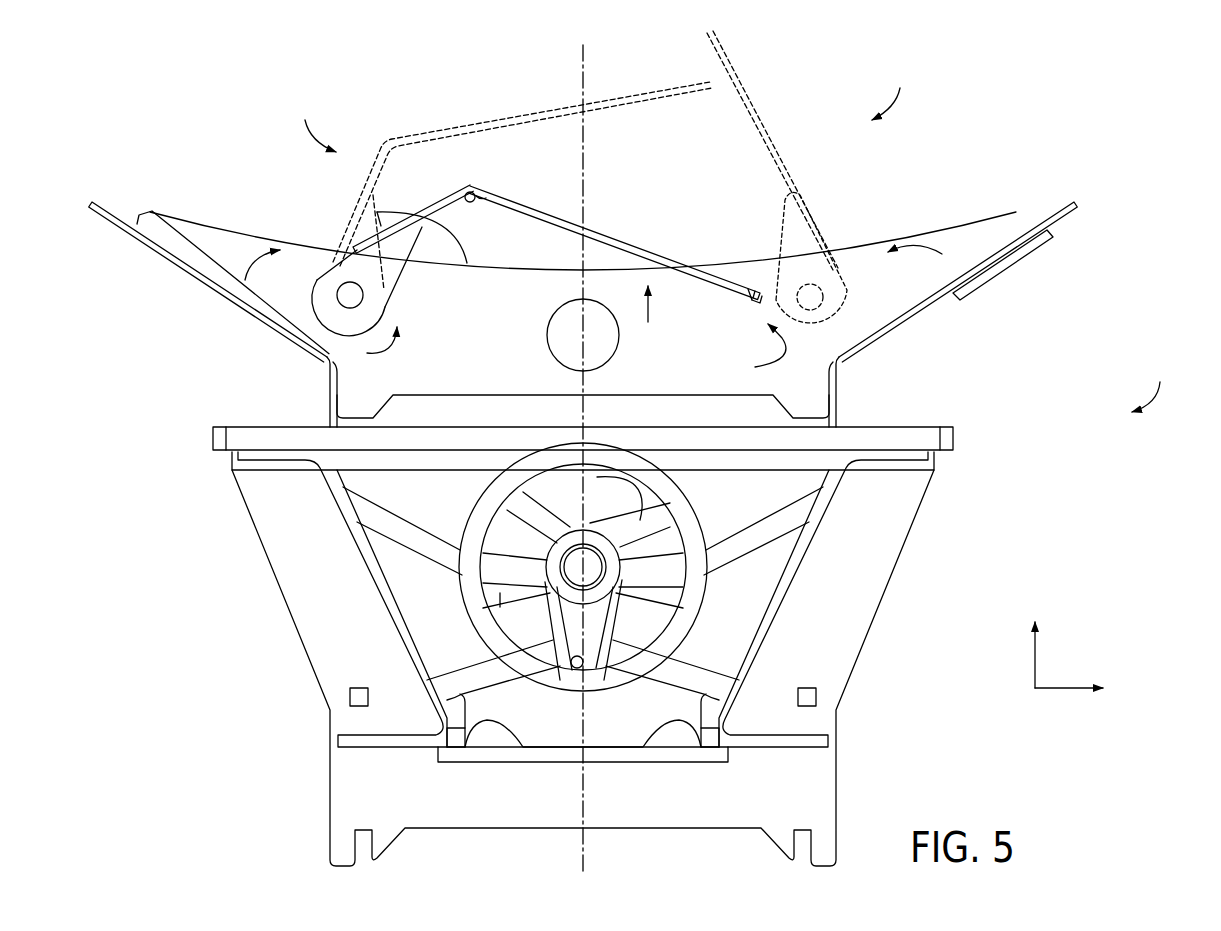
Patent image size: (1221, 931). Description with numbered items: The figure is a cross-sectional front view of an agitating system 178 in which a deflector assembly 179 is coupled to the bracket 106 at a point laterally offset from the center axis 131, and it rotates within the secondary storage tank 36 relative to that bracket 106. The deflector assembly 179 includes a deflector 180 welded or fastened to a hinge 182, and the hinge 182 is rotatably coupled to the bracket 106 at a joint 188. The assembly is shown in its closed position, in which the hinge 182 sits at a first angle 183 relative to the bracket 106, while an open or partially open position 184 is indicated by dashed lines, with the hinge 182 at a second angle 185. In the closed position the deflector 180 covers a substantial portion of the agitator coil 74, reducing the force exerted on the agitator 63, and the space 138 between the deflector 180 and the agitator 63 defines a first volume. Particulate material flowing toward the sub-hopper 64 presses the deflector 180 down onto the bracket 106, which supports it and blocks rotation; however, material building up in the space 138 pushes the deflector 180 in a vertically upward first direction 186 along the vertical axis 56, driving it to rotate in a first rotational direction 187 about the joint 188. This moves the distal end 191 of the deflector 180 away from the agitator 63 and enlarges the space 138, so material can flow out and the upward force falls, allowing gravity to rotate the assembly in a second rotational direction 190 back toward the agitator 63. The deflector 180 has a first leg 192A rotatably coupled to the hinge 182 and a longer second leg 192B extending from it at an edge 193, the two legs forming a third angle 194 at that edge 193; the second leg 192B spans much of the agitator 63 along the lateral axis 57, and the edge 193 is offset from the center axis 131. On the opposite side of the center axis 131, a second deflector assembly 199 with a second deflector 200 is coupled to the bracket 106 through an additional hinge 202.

The secondary storage tank 36 is at (1068, 210).
The vertical axis 56 is at (1035, 668).
The lateral axis 57 is at (1050, 690).
The agitator 63 is at (616, 724).
The sub-hopper 64 is at (950, 440).
The agitator coil 74 is at (705, 600).
The bracket 106 is at (150, 216).
The center axis 131 is at (580, 80).
The space 138 is at (514, 419).
The agitating system 178 is at (1153, 381).
The deflector assembly 179 is at (312, 122).
The deflector 180 is at (630, 182).
The hinge 182 is at (414, 274).
The first angle 183 is at (420, 253).
The open position 184 is at (482, 106).
The second angle 185 is at (458, 248).
The first direction 186 is at (652, 316).
The first rotational direction 187 is at (384, 360).
The joint 188 is at (336, 298).
The second rotational direction 190 is at (248, 240).
The distal end 191 is at (757, 288).
The first leg 192A is at (446, 204).
The second leg 192B is at (660, 258).
The edge 193 is at (470, 186).
The third angle 194 is at (480, 196).
The second deflector assembly 199 is at (894, 86).
The second deflector 200 is at (730, 74).
The additional hinge 202 is at (818, 282).